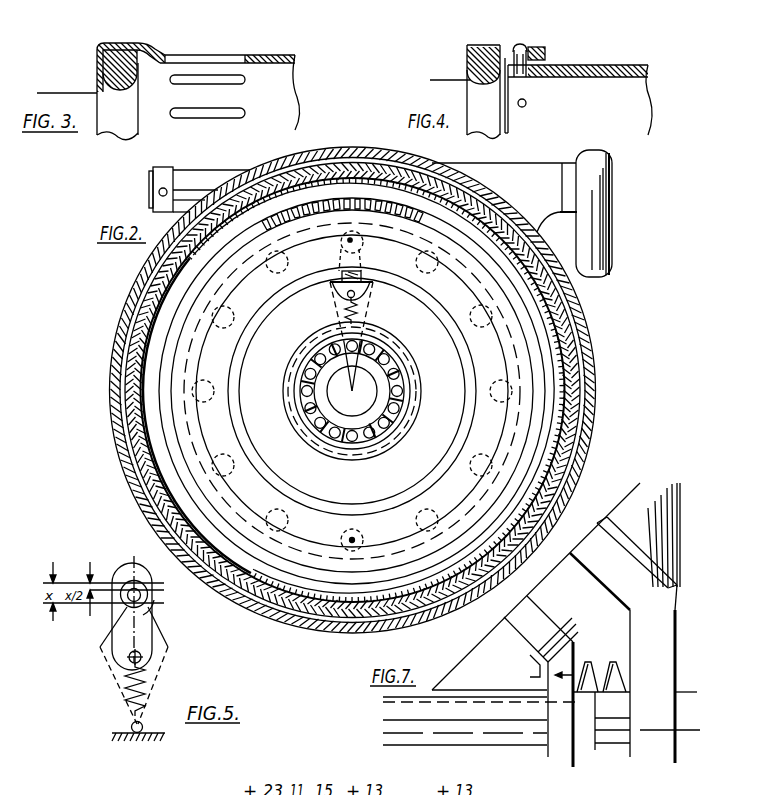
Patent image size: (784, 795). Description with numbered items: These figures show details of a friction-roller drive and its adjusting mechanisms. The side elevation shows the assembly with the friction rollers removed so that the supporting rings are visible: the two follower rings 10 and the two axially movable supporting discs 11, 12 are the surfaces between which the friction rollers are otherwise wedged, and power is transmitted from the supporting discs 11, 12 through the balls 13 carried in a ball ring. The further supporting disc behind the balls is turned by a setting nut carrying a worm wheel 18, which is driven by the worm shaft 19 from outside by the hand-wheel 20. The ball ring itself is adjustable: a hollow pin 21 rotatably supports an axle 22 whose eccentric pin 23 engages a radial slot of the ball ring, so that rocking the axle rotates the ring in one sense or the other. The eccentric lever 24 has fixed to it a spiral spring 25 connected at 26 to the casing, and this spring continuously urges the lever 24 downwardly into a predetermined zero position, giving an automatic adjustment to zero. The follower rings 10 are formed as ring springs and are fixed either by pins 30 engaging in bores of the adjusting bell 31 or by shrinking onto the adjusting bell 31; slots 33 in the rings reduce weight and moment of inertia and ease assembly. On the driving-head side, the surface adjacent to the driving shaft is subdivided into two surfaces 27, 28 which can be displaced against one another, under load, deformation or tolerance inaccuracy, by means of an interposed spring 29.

In FIG. 3, the follower ring 10 is at (116, 72).
In FIG. 4, the follower ring 10 is at (470, 63).
In FIG. 2, the follower ring 10 is at (545, 296).
In FIG. 2, the supporting disc 11 is at (464, 263).
In FIG. 2, the supporting disc 12 is at (463, 297).
In FIG. 2, the balls 13 is at (432, 257).
In FIG. 2, the worm wheel 18 is at (404, 212).
In FIG. 2, the worm shaft 19 is at (356, 203).
In FIG. 2, the hand-wheel 20 is at (607, 256).
In FIG. 2, the hollow pin 21 is at (343, 265).
In FIG. 5, the axle 22 is at (145, 578).
In FIG. 5, the eccentric pin 23 is at (148, 613).
In FIG. 5, the eccentric lever 24 is at (120, 648).
In FIG. 2, the spiral spring 25 is at (363, 314).
In FIG. 5, the spiral spring 25 is at (152, 689).
In FIG. 5, the connection to casing 26 is at (145, 727).
In FIG. 7, the driving head surface 27 is at (667, 636).
In FIG. 7, the driving head surface 28 is at (552, 759).
In FIG. 7, the spring 29 is at (630, 678).
In FIG. 4, the pin 30 is at (533, 63).
In FIG. 3, the adjusting bell 31 is at (254, 54).
In FIG. 4, the adjusting bell 31 is at (590, 76).
In FIG. 2, the adjusting bell 31 is at (547, 307).
In FIG. 3, the slots 33 is at (215, 108).